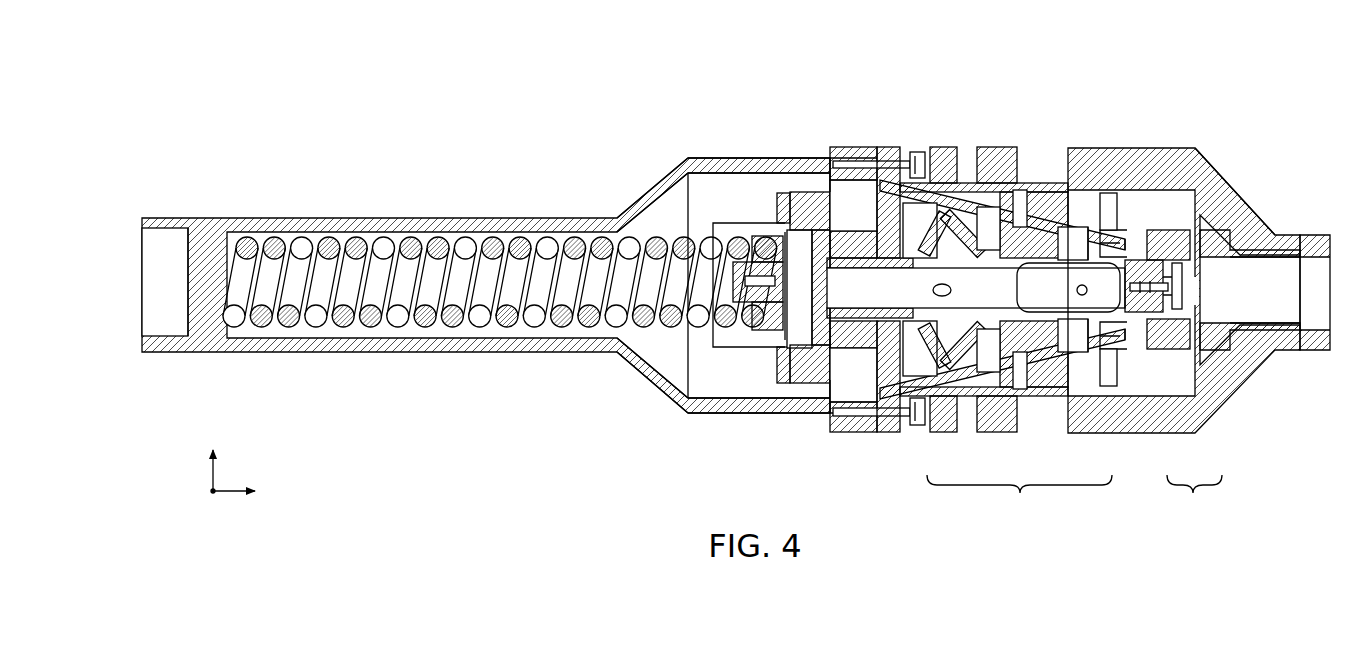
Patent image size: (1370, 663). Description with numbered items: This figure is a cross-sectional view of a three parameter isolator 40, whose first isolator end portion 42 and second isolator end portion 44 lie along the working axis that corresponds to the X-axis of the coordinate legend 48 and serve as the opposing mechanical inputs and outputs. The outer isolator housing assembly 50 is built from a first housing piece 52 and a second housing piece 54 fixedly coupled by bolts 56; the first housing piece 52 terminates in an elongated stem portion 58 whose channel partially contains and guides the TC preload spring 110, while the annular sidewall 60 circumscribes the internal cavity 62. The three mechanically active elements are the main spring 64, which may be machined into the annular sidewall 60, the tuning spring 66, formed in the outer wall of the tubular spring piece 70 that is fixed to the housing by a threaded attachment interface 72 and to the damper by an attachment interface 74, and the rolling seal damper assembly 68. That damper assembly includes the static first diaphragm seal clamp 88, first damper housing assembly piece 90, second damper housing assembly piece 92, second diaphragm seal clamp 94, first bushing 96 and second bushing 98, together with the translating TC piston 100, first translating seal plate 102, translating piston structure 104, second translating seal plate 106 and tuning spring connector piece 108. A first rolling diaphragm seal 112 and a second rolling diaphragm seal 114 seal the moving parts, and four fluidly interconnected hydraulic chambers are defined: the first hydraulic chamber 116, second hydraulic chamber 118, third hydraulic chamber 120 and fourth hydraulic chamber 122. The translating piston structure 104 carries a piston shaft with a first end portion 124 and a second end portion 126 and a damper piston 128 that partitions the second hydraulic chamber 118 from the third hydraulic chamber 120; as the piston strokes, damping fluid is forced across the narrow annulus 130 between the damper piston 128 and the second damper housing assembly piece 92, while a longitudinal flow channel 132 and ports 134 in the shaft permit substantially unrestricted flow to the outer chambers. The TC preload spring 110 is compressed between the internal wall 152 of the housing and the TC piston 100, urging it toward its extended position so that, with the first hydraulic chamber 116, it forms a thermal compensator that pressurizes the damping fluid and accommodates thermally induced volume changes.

The three parameter isolator 40 is at (387, 112).
The first isolator end portion 42 is at (170, 218).
The second isolator end portion 44 is at (1305, 235).
The coordinate legend 48 is at (215, 470).
The outer isolator housing assembly 50 is at (643, 195).
The first housing piece 52 is at (483, 218).
The second housing piece 54 is at (1232, 198).
The bolts 56 is at (890, 160).
The stem portion 58 is at (280, 218).
The annular sidewall 60 is at (1150, 148).
The internal cavity 62 is at (693, 218).
The main spring 64 is at (1019, 501).
The tuning spring 66 is at (1194, 501).
The rolling seal damper assembly 68 is at (825, 178).
The tubular spring piece 70 is at (1245, 345).
The threaded attachment interface 72 is at (1280, 258).
The attachment interface 74 is at (1168, 258).
The first diaphragm seal clamp 88 is at (777, 200).
The first damper housing assembly piece 90 is at (825, 395).
The second damper housing assembly piece 92 is at (1003, 190).
The second diaphragm seal clamp 94 is at (1135, 352).
The first bushing 96 is at (943, 175).
The second bushing 98 is at (1070, 195).
The TC piston 100 is at (740, 292).
The first translating seal plate 102 is at (772, 385).
The translating piston structure 104 is at (837, 258).
The second translating seal plate 106 is at (1032, 290).
The tuning spring connector piece 108 is at (1180, 300).
The TC preload spring 110 is at (470, 330).
The first rolling diaphragm seal 112 is at (745, 335).
The second rolling diaphragm seal 114 is at (1120, 240).
The first hydraulic chamber 116 is at (788, 301).
The second hydraulic chamber 118 is at (905, 239).
The third hydraulic chamber 120 is at (992, 370).
The fourth hydraulic chamber 122 is at (1072, 352).
The first end portion of piston shaft 124 is at (862, 318).
The second end portion of piston shaft 126 is at (1120, 335).
The damper piston 128 is at (950, 372).
The annulus 130 is at (990, 190).
The longitudinal flow channel 132 is at (842, 301).
The ports 134 is at (951, 290).
The internal wall 152 is at (188, 270).